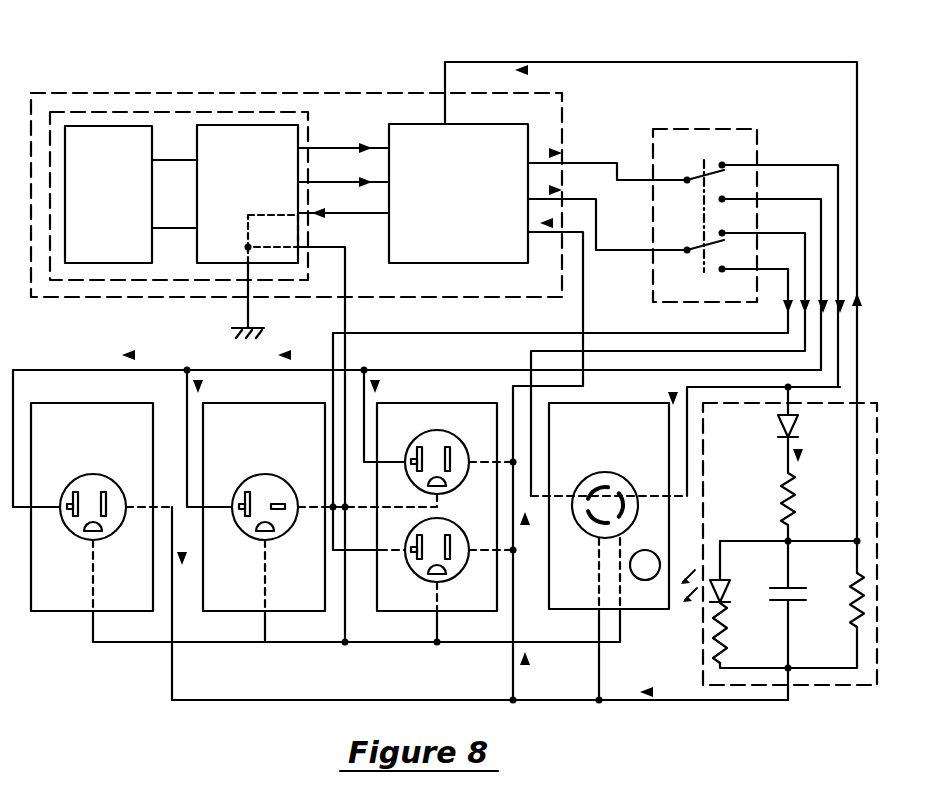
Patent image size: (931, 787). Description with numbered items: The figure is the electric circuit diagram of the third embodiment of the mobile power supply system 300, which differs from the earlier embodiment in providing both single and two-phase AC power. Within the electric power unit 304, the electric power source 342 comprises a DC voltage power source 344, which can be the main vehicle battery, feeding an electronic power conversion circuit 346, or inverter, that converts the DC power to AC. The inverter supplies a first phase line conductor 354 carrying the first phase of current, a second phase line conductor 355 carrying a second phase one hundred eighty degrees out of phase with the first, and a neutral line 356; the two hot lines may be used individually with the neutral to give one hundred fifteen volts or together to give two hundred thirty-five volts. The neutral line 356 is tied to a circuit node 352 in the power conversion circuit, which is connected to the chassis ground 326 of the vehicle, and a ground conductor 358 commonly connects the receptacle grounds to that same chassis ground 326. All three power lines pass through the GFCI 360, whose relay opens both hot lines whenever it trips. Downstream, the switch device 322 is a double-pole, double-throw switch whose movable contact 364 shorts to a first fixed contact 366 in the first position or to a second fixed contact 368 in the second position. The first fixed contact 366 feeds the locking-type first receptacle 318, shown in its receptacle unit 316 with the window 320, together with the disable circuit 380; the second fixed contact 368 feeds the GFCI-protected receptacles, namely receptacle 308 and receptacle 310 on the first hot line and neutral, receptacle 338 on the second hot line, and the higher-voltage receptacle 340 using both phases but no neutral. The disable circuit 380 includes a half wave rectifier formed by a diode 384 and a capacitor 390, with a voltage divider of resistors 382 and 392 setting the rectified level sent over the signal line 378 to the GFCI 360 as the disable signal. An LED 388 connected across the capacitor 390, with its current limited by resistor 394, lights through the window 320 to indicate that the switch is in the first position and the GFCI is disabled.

The mobile power supply system 300 is at (105, 75).
The electric power unit 304 is at (232, 93).
The electric power source 342 is at (255, 112).
The DC voltage power source 344 is at (135, 125).
The electronic power conversion circuit 346 is at (307, 112).
The circuit node 352 is at (247, 237).
The chassis ground 326 is at (246, 328).
The ground conductor 358 is at (345, 283).
The first phase line conductor 354 is at (380, 148).
The second phase line conductor 355 is at (389, 178).
The neutral line 356 is at (368, 217).
The GFCI 360 is at (473, 124).
The signal line 378 is at (632, 62).
The switch device 322 is at (718, 129).
The movable contact 364 is at (702, 177).
The first fixed contact 366 is at (722, 165).
The second fixed contact 368 is at (722, 199).
The receptacle 308 is at (93, 474).
The receptacle 340 is at (265, 474).
The receptacle 310 is at (437, 430).
The receptacle 338 is at (474, 510).
The receptacle module 316 is at (600, 403).
The twist-lock receptacle 318 is at (605, 474).
The window 320 is at (645, 580).
The disable circuit 380 is at (703, 632).
The diode 384 is at (780, 427).
The resistor 382 is at (786, 478).
The LED 388 is at (720, 580).
The resistor 394 is at (720, 647).
The capacitor 390 is at (796, 588).
The resistor 392 is at (855, 612).